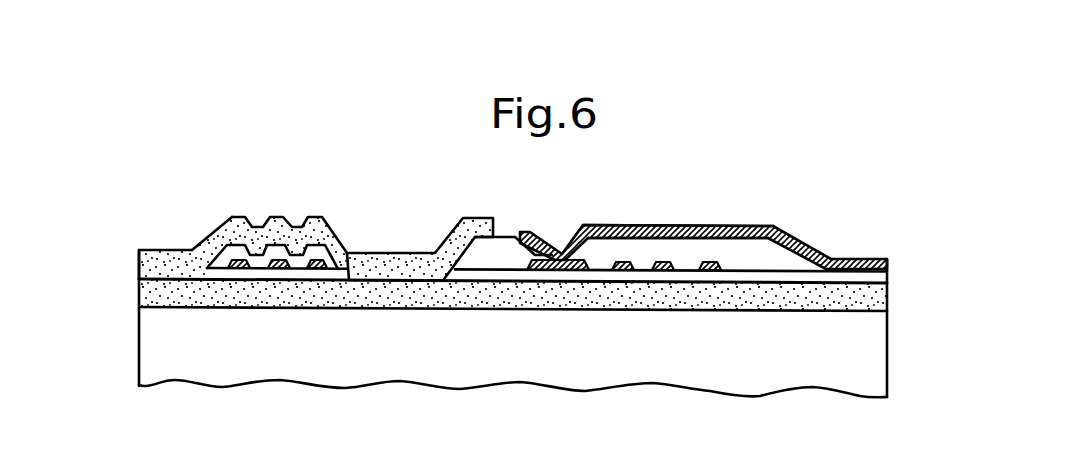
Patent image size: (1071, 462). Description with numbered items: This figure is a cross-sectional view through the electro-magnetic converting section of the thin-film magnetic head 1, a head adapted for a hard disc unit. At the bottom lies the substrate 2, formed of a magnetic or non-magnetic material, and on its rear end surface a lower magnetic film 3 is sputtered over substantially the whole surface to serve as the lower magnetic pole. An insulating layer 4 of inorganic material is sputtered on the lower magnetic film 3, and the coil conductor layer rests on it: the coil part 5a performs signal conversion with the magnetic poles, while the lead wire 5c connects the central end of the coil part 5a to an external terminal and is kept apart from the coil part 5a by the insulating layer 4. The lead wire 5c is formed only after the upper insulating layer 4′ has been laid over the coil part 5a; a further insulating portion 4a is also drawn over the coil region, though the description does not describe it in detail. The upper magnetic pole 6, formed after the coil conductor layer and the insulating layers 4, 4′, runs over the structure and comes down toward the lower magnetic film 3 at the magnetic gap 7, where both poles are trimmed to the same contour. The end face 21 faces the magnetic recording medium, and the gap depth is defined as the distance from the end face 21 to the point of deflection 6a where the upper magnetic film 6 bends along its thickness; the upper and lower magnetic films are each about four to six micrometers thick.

The thin-film magnetic head 1 is at (873, 370).
The substrate 2 is at (873, 300).
The lower magnetic film 3 is at (292, 291).
The insulating layer 4 is at (222, 281).
The protective coating layer 4a is at (198, 239).
The upper insulating layer 4′ is at (331, 230).
The coil part 5a is at (238, 259).
The lead wire 5c is at (675, 226).
The upper magnetic pole 6 is at (402, 258).
The point of deflection 6a is at (184, 246).
The magnetic gap 7 is at (138, 277).
The end face 21 is at (138, 368).